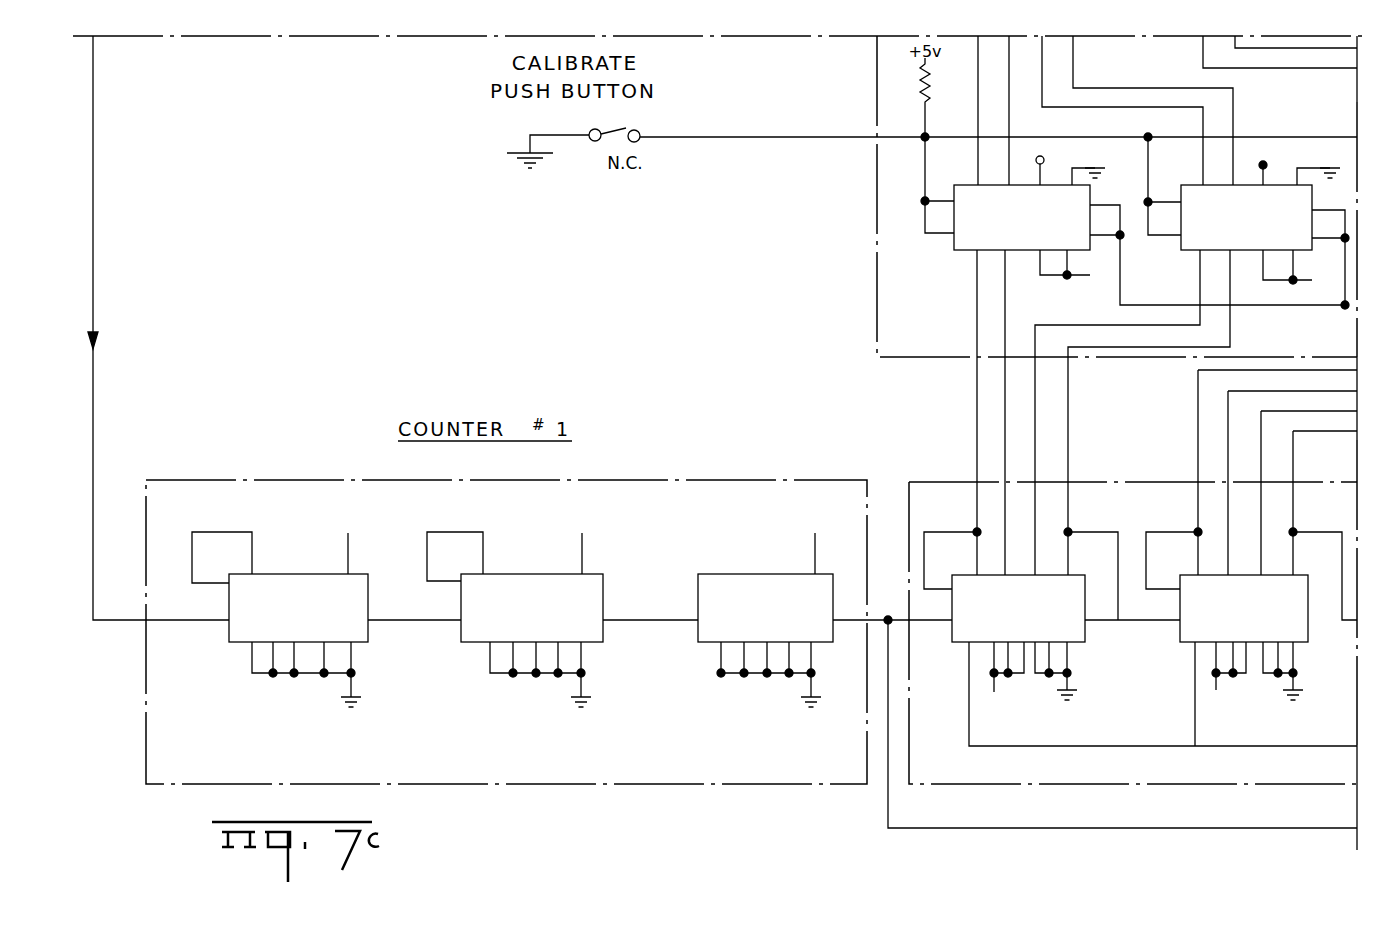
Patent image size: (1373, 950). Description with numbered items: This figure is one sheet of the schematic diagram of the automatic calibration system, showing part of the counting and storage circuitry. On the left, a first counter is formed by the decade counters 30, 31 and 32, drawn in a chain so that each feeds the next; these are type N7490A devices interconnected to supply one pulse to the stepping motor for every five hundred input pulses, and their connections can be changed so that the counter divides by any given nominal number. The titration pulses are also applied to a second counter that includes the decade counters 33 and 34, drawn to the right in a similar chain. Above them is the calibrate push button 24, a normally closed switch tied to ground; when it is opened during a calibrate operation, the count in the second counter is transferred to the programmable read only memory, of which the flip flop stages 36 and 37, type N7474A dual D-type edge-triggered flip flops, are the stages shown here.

The calibrate push button 24 is at (626, 129).
The decade counter 30 is at (368, 604).
The decade counter 31 is at (603, 598).
The decade counter 32 is at (731, 573).
The decade counter 33 is at (1085, 641).
The decade counter 34 is at (1308, 641).
The flip flop stage 36 is at (967, 252).
The flip flop stage 37 is at (1275, 185).